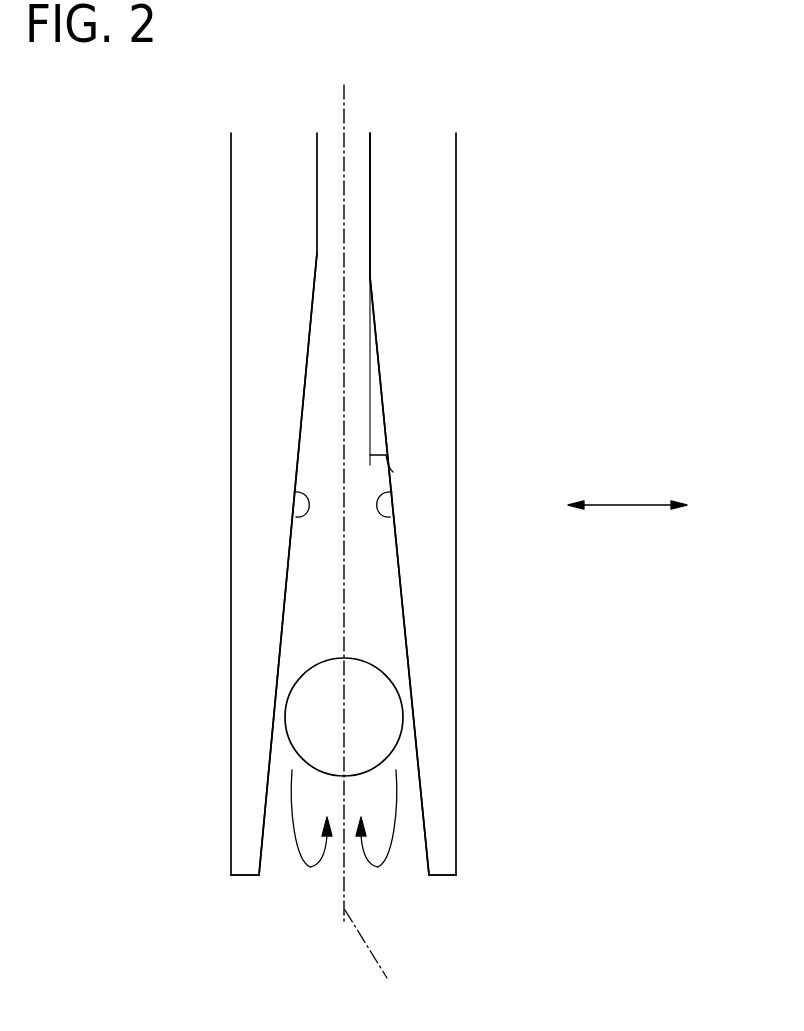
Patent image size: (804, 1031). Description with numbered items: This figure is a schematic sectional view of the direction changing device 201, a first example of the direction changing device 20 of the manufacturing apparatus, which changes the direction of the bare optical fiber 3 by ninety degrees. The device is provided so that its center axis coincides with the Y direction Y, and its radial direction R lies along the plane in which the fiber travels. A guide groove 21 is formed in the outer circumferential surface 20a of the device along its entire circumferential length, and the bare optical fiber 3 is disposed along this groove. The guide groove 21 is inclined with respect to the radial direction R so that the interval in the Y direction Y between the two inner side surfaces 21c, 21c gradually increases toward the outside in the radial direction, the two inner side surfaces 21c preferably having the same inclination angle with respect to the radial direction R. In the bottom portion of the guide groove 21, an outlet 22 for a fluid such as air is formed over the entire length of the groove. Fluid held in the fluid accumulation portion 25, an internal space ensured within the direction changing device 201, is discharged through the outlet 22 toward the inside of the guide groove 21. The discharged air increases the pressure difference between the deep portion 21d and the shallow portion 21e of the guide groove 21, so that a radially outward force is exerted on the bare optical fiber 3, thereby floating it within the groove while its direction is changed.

The direction changing device 201 is at (431, 504).
The direction changing device 20 is at (457, 192).
The fluid accumulation portion 25 is at (356, 190).
The outlet 22 is at (357, 252).
The guide groove 21 is at (372, 580).
The deep portion 21d is at (325, 377).
The inner side surface 21c is at (297, 516).
The shallow portion 21e is at (327, 795).
The bare optical fiber 3 is at (403, 715).
The outer circumferential surface 20a is at (245, 875).
The Y direction Y is at (627, 487).
The radial direction R is at (370, 962).